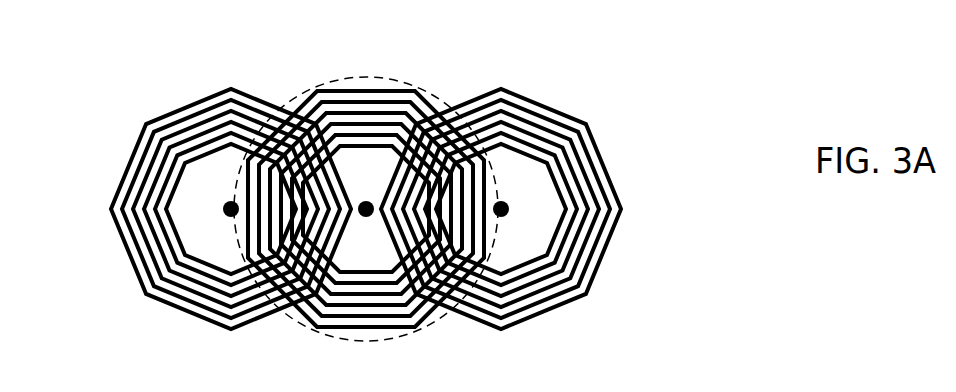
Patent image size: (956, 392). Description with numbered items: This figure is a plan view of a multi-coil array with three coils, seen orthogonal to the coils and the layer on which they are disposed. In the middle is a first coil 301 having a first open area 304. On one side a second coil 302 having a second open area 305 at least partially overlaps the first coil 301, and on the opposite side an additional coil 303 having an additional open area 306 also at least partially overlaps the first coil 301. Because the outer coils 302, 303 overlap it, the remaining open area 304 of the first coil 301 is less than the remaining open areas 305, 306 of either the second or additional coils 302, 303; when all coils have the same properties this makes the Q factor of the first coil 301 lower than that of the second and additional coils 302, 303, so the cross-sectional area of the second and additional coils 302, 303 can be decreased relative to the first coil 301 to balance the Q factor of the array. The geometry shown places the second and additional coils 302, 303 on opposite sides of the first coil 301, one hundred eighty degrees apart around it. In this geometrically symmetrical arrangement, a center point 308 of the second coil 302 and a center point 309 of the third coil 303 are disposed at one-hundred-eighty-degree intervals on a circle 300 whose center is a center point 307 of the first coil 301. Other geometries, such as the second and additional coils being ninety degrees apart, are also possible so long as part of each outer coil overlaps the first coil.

The circle 300 is at (351, 196).
The first coil 301 is at (451, 164).
The second coil 302 is at (510, 186).
The additional coil 303 is at (183, 186).
The first open area 304 is at (305, 138).
The second open area 305 is at (565, 178).
The additional open area 306 is at (156, 184).
The center point of the first coil 307 is at (351, 220).
The center point of the second coil 308 is at (588, 169).
The center point of the third coil 309 is at (137, 188).